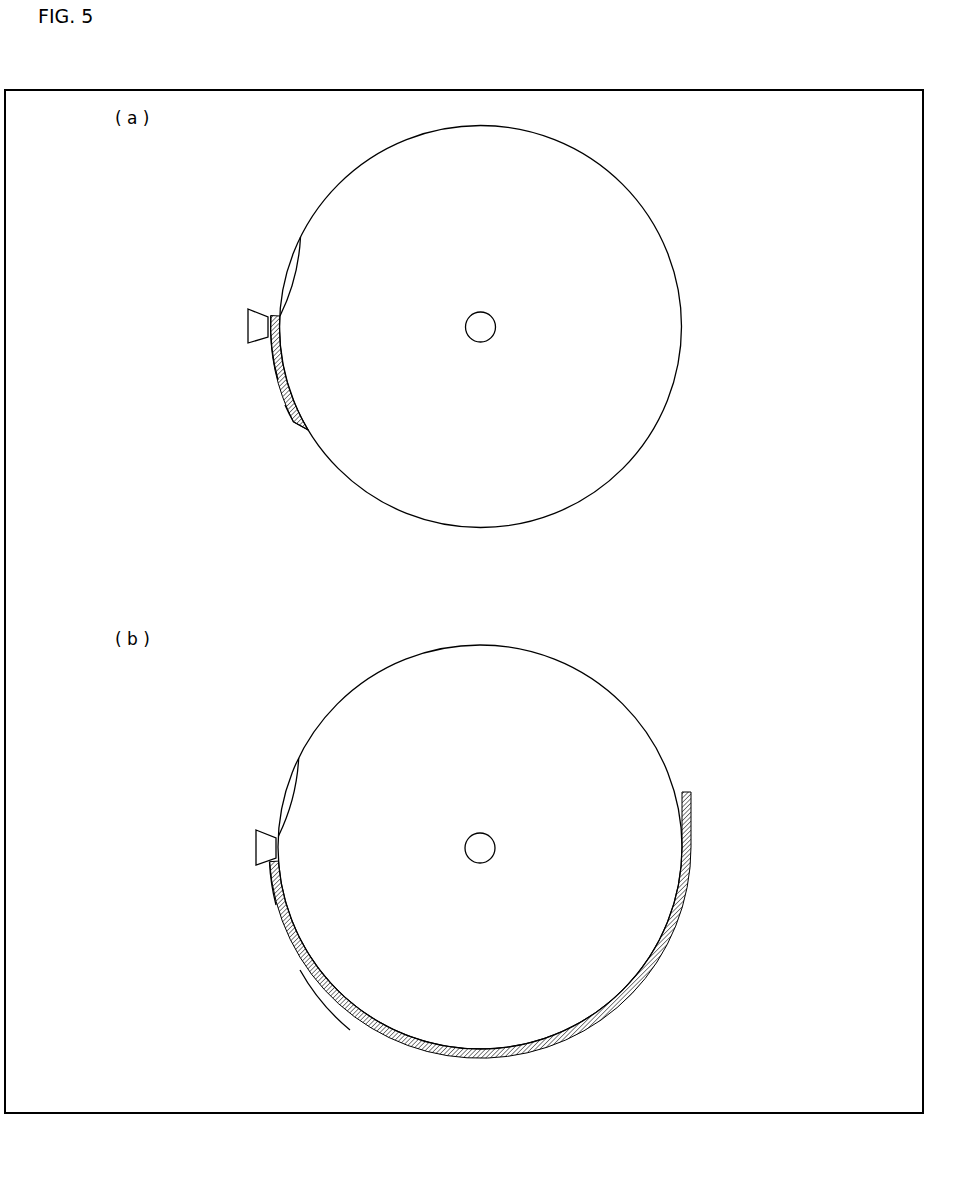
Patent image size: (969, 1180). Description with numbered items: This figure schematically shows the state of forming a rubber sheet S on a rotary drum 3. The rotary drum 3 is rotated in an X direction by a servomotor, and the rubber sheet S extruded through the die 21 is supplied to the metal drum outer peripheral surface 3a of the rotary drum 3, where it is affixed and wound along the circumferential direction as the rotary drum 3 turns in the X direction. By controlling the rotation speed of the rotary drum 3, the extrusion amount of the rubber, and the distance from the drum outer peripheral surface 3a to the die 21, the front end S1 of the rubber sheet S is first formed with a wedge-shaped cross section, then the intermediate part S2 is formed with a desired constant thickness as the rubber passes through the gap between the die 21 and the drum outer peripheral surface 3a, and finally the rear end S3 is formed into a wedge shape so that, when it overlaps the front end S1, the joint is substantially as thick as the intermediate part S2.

The rotary drum 3 is at (302, 211).
The drum outer peripheral surface 3a is at (300, 238).
The die 21 is at (252, 309).
The X direction X is at (336, 402).
The rubber sheet S is at (278, 391).
The front end S1 is at (308, 432).
The intermediate part S2 is at (274, 370).
The rear end S3 is at (273, 890).